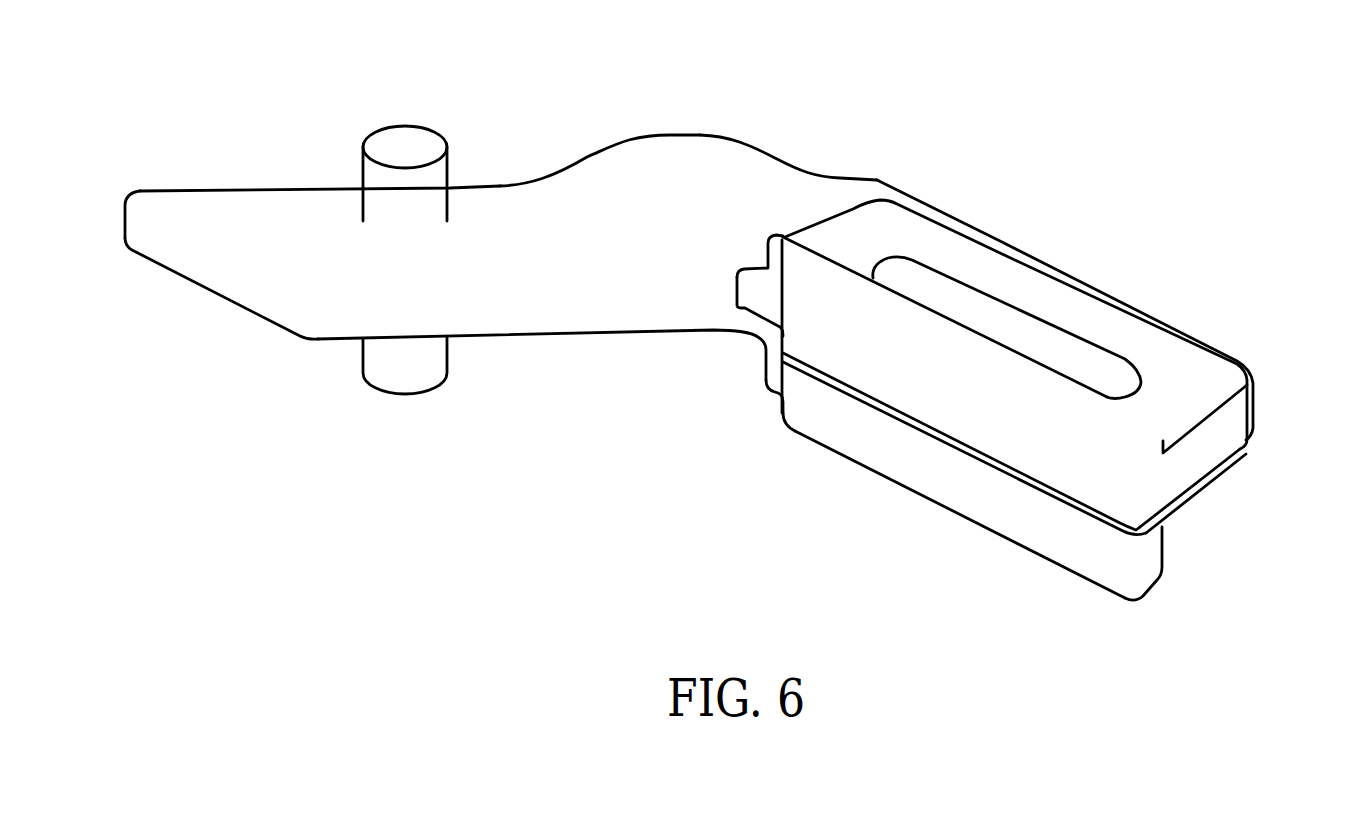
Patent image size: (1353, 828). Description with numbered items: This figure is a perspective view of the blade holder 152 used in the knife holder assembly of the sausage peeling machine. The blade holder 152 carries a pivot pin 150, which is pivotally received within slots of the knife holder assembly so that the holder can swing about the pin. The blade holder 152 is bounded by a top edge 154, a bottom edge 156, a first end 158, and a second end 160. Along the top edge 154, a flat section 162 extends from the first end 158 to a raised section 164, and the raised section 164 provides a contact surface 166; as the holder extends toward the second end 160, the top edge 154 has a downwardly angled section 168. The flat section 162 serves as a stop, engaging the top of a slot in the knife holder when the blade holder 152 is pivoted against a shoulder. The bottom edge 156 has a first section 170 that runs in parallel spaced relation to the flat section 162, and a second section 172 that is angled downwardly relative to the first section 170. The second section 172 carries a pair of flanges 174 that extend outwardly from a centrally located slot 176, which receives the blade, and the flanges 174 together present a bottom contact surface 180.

The pivot pin 150 is at (434, 178).
The blade holder 152 is at (902, 89).
The top edge 154 is at (867, 178).
The bottom edge 156 is at (730, 313).
The first end 158 is at (207, 262).
The second end 160 is at (1220, 420).
The flat section 162 is at (282, 189).
The raised section 164 is at (653, 163).
The contact surface 166 is at (713, 132).
The downwardly angled section 168 is at (1063, 273).
The first section 170 is at (558, 307).
The second section 172 is at (1053, 567).
The flanges 174 is at (1090, 437).
The slot 176 is at (1100, 543).
The bottom contact surface 180 is at (988, 420).